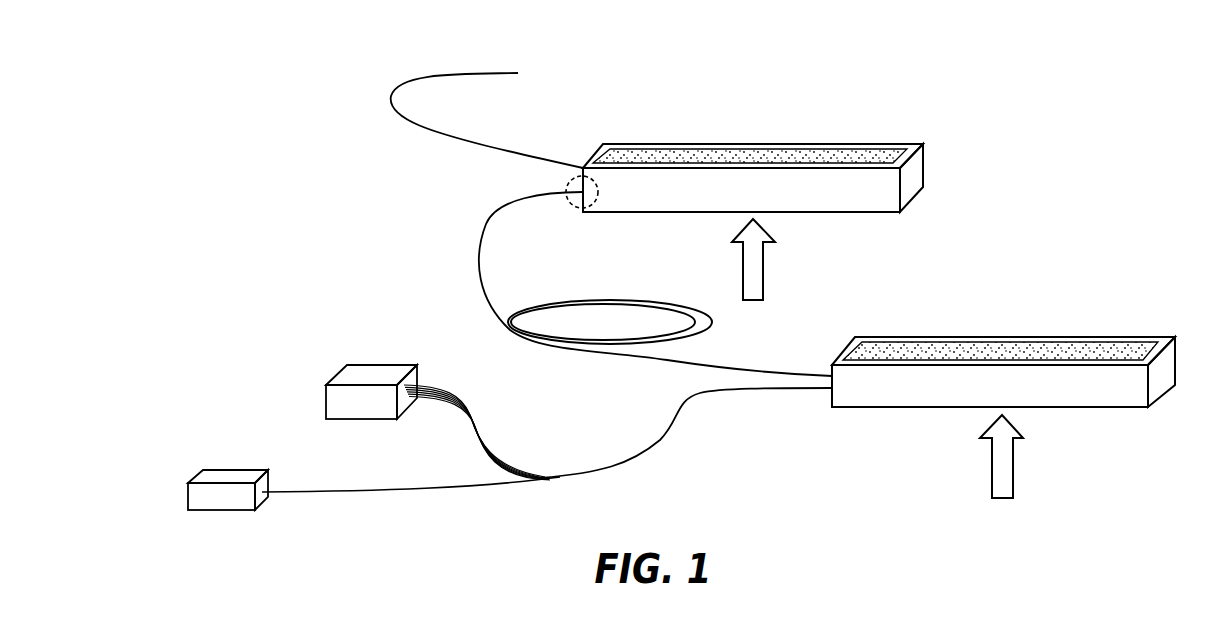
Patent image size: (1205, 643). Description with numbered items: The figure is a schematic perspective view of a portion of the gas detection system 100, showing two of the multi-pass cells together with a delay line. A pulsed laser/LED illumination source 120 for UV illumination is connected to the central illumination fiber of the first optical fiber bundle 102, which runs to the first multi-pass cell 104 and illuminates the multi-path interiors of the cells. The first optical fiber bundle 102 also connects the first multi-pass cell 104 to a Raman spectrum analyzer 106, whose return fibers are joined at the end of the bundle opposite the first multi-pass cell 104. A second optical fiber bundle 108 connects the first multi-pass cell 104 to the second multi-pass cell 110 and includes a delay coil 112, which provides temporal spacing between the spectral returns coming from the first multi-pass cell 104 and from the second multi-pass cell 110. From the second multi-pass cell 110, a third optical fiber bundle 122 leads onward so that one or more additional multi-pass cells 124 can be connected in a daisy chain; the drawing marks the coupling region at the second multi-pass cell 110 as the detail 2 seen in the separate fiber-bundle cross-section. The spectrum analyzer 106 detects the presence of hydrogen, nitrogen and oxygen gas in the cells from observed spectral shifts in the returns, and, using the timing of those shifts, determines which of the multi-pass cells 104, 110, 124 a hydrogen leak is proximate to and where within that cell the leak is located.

The gas detection system 100 is at (292, 138).
The first optical fiber bundle 102 is at (680, 430).
The first multi-pass cell 104 is at (1103, 408).
The Raman spectrum analyzer 106 is at (326, 404).
The second optical fiber bundle 108 is at (800, 373).
The second multi-pass cell 110 is at (918, 173).
The delay coil 112 is at (657, 298).
The pulsed laser/LED illumination source 120 is at (190, 493).
The third optical fiber bundle 122 is at (457, 72).
The additional multi-pass cells 124 is at (630, 73).
The fiber coupling point 2 is at (570, 181).